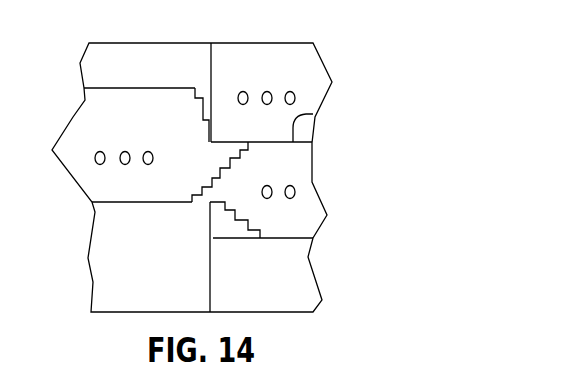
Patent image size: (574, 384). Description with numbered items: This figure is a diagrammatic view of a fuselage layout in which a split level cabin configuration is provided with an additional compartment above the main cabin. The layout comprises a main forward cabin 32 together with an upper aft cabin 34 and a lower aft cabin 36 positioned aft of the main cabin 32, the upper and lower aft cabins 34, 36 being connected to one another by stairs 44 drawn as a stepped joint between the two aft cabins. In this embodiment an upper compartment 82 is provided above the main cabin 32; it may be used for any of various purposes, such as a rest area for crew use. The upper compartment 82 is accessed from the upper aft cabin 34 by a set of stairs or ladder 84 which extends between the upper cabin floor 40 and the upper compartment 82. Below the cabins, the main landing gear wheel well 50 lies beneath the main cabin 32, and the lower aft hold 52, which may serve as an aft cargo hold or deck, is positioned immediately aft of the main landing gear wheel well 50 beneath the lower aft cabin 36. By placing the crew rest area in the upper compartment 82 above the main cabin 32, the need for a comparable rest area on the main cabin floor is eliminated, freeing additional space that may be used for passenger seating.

The main cabin 32 is at (88, 128).
The upper aft cabin 34 is at (310, 63).
The lower aft cabin 36 is at (303, 207).
The upper cabin floor 40 is at (313, 114).
The stairs 44 is at (211, 160).
The main landing gear wheel well 50 is at (113, 267).
The lower aft hold 52 is at (290, 280).
The upper compartment 82 is at (105, 70).
The stairs or ladder 84 is at (214, 97).